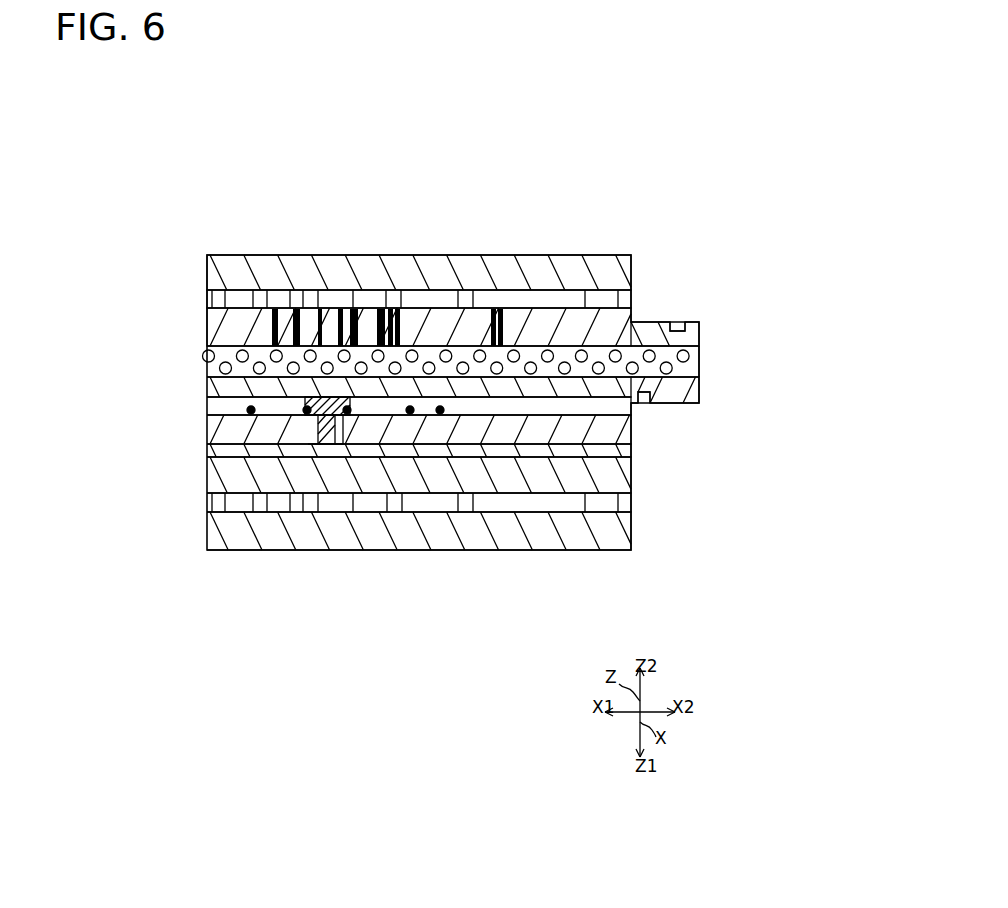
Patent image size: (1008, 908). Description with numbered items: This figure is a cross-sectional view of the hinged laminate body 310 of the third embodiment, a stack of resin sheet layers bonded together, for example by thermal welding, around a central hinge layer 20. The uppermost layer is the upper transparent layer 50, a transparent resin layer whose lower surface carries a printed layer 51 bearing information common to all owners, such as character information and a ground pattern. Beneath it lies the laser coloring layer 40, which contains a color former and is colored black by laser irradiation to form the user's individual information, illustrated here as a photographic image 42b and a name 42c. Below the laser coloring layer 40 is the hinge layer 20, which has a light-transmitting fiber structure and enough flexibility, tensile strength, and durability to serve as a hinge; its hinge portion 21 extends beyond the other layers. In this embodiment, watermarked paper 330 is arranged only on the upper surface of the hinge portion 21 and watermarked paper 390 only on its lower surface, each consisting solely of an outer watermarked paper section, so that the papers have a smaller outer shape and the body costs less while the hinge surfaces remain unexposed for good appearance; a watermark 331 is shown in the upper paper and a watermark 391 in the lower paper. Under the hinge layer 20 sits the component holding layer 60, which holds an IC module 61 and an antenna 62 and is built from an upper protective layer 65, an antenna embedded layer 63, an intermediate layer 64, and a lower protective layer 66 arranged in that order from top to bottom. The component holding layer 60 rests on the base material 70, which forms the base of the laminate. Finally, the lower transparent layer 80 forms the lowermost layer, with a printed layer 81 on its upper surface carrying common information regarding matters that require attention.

The hinged laminate body 310 is at (616, 150).
The upper transparent layer 50 is at (272, 262).
The printed layer 51 is at (207, 298).
The laser coloring layer 40 is at (443, 323).
The photographic image 42b is at (375, 322).
The name 42c is at (490, 320).
The watermarked paper 330 is at (699, 324).
The watermark 331 is at (677, 327).
The hinge layer 20 is at (699, 354).
The hinge portion 21 is at (699, 372).
The watermarked paper 390 is at (687, 380).
The watermark 391 is at (645, 401).
The component holding layer 60 is at (364, 429).
The antenna 62 is at (249, 406).
The upper protective layer 65 is at (207, 383).
The antenna embedded layer 63 is at (376, 381).
The intermediate layer 64 is at (208, 430).
The lower protective layer 66 is at (208, 455).
The IC module 61 is at (306, 428).
The base material 70 is at (627, 473).
The printed layer 81 is at (620, 503).
The lower transparent layer 80 is at (627, 532).